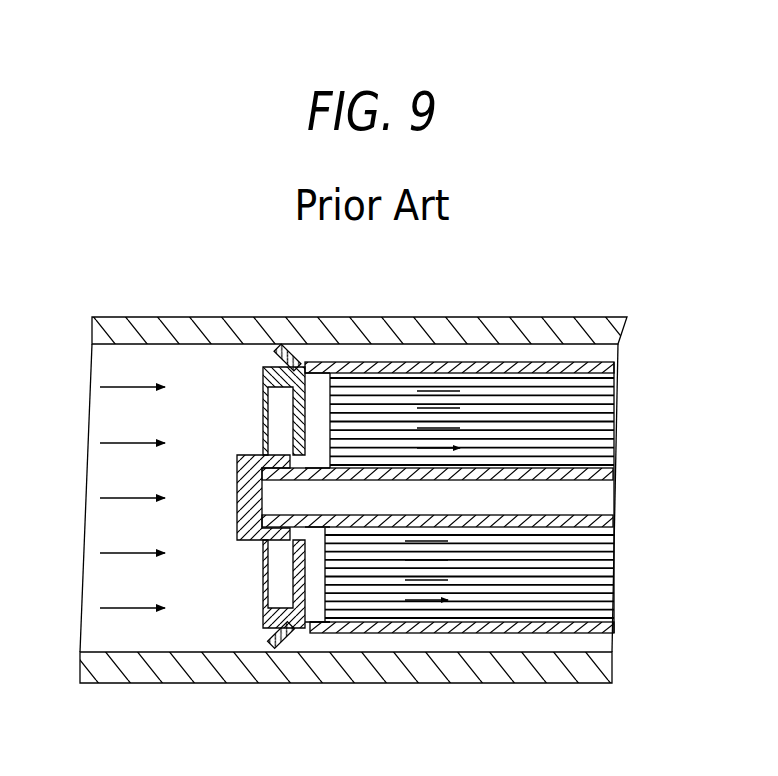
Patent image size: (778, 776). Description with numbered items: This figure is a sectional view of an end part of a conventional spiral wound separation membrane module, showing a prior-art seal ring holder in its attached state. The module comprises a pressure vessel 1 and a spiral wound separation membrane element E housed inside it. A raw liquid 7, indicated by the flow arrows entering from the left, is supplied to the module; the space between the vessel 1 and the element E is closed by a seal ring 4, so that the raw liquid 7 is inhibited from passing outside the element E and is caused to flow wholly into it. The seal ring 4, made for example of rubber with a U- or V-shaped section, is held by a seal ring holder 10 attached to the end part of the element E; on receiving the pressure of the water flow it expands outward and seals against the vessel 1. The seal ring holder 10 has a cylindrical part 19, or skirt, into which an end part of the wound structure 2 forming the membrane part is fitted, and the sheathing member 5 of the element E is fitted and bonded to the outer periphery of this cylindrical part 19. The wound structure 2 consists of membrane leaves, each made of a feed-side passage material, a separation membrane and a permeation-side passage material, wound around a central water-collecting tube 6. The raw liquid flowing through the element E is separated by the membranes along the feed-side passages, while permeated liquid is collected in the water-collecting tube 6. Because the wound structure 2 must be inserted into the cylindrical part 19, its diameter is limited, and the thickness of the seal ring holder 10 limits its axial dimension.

The pressure vessel 1 is at (187, 332).
The wound structure 2 is at (598, 410).
The seal ring 4 is at (303, 346).
The sheathing member 5 is at (537, 370).
The water-collecting tube 6 is at (588, 493).
The raw liquid 7 is at (125, 385).
The seal ring holder 10 is at (327, 355).
The cylindrical part 19 is at (342, 633).
The spiral wound separation membrane element E is at (427, 353).